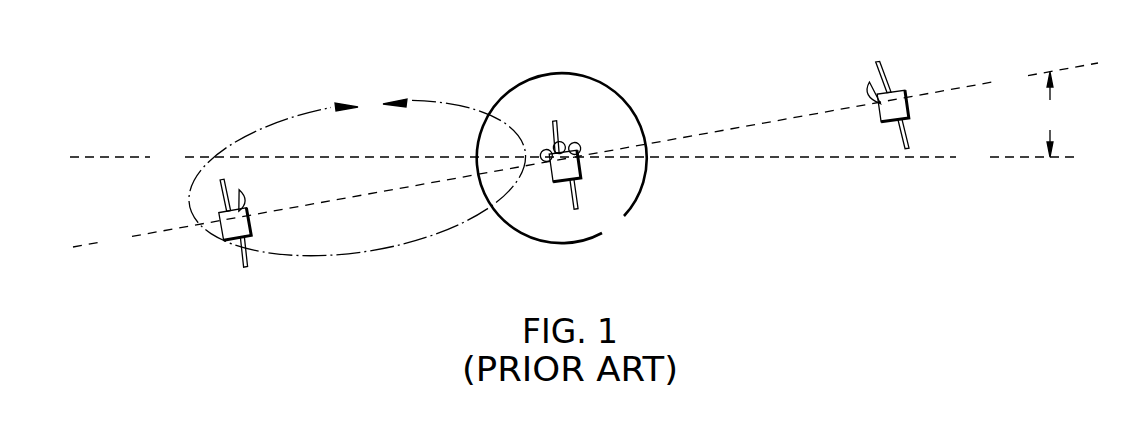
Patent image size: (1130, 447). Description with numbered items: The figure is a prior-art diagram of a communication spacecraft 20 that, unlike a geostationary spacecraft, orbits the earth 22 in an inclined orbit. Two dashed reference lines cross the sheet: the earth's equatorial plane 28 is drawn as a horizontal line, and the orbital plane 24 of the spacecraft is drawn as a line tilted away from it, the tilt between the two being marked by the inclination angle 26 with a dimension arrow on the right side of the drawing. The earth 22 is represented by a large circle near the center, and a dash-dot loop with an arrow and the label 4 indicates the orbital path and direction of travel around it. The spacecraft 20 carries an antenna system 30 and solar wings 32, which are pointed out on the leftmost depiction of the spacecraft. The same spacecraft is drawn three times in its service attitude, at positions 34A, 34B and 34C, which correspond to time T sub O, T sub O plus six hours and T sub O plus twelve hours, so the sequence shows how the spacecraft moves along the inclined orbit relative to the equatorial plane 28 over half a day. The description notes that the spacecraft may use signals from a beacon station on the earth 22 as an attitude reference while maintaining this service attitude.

The orbit direction / orbital path 4 is at (357, 172).
The communication spacecraft 20 is at (222, 231).
The earth 22 is at (647, 183).
The orbital plane 24 is at (585, 159).
The inclination angle 26 is at (1053, 114).
The equatorial plane 28 is at (575, 158).
The antenna system 30 is at (248, 200).
The solar wings 32 is at (241, 263).
The position 34A is at (245, 263).
The position 34B is at (578, 205).
The position 34C is at (904, 144).